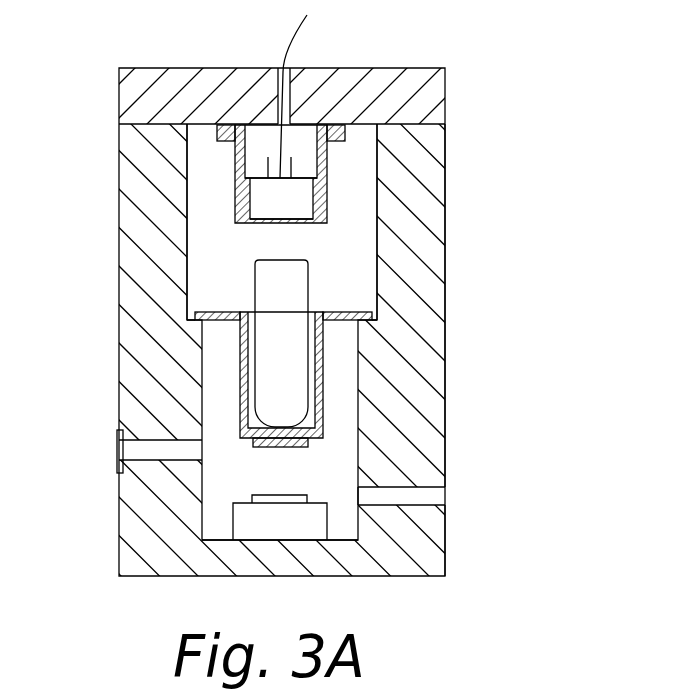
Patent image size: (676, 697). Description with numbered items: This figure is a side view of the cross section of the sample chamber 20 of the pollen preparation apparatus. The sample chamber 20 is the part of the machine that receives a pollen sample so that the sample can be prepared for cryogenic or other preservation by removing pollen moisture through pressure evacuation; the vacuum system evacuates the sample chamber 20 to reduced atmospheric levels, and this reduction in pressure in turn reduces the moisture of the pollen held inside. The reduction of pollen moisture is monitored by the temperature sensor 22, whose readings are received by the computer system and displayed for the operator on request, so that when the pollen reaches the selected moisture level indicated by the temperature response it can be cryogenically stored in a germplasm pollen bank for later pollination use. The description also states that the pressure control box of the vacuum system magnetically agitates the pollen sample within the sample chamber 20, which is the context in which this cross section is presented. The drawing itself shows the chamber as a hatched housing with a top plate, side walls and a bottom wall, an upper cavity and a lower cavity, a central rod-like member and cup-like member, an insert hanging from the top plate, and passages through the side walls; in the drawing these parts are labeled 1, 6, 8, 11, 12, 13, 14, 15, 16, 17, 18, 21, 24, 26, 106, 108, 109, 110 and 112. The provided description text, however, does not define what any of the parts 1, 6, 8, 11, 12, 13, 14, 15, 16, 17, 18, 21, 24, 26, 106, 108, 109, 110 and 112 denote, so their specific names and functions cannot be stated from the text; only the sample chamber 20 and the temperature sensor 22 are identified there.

The gap 1 is at (172, 325).
The cylinder cup 6 is at (235, 380).
The flow path 8 is at (353, 212).
The flange 11 is at (375, 308).
The housing 12 is at (447, 180).
The flange 13 is at (362, 332).
The chamber 14 is at (190, 152).
The filament 15 is at (288, 52).
The opening 16 is at (278, 66).
The housing wall 17 is at (448, 223).
The top plate 18 is at (447, 98).
The sample chamber 20 is at (527, 78).
The piston rod 21 is at (242, 275).
The temperature sensor 22 is at (228, 227).
The lower housing 24 is at (447, 460).
The insert 26 is at (220, 178).
The base block 106 is at (227, 518).
The bottom plate 108 is at (322, 445).
The outlet passage 109 is at (447, 493).
The vent passage 110 is at (117, 453).
The bottom wall 112 is at (343, 543).